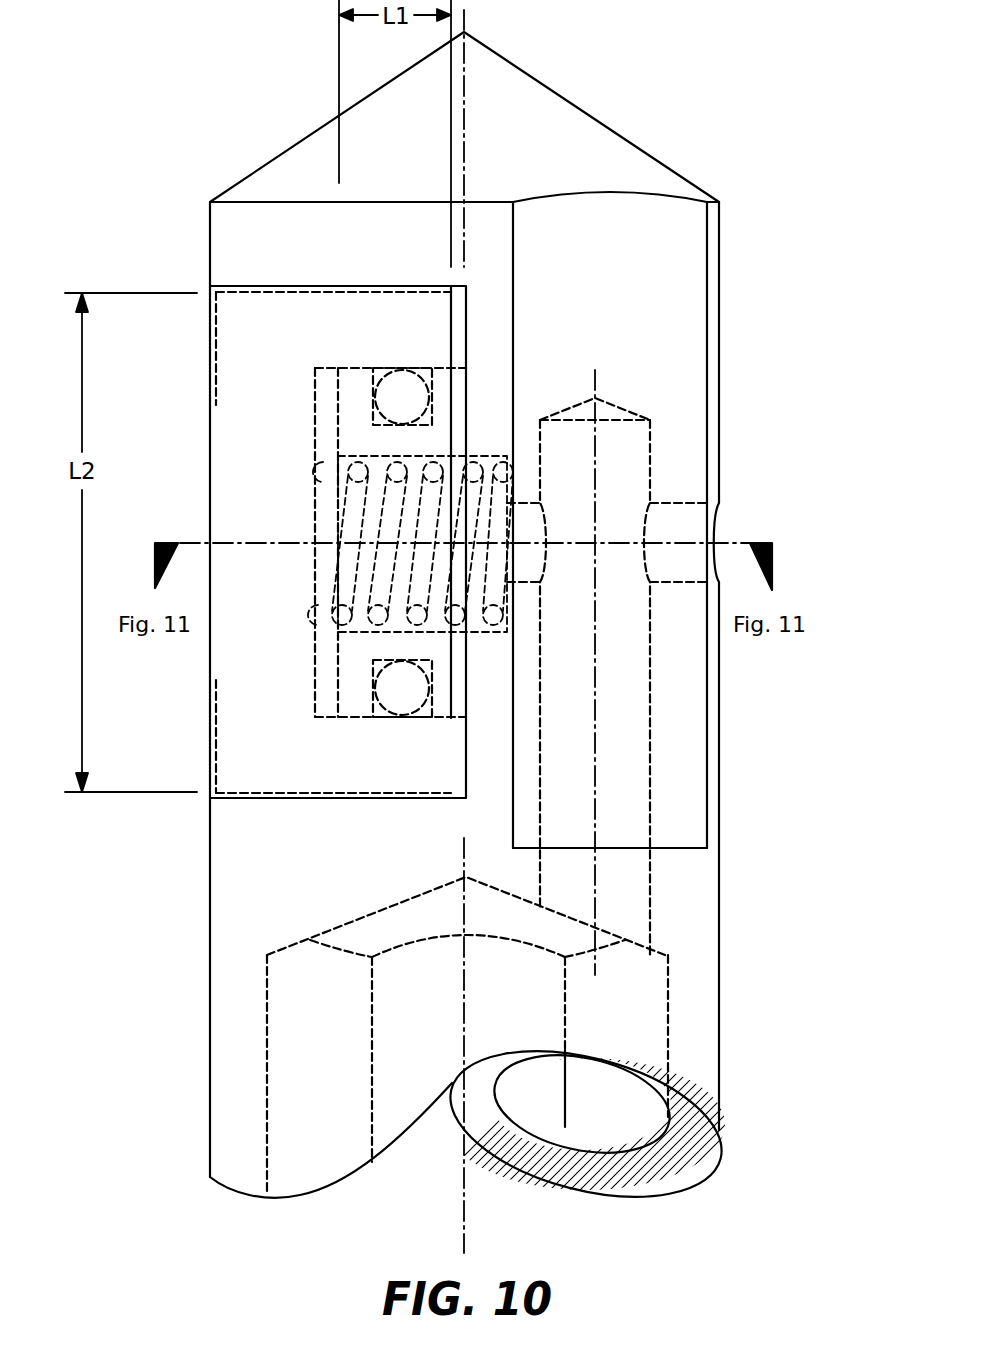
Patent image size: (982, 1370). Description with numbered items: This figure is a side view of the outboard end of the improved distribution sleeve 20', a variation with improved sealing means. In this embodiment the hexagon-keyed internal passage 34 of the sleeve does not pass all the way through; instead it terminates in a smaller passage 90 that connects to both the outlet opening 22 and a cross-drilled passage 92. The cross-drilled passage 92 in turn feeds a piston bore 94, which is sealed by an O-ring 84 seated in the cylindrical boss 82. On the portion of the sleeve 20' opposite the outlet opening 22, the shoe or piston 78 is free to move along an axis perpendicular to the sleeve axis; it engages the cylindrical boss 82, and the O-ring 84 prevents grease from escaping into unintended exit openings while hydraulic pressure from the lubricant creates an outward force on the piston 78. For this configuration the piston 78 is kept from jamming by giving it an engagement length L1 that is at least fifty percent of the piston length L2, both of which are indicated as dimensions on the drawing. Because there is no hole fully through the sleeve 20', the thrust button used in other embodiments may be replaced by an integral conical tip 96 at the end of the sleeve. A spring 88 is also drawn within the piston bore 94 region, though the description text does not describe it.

The distribution sleeve 20' is at (523, 700).
The outlet opening 22 is at (718, 518).
The hexagon-keyed internal passage 34 is at (668, 1030).
The shoe or piston 78 is at (210, 433).
The cylindrical boss 82 is at (362, 366).
The O-ring 84 is at (385, 720).
The spring 88 is at (355, 511).
The smaller passage 90 is at (651, 735).
The cross-drilled passage 92 is at (547, 525).
The piston bore 94 is at (327, 661).
The integral conical tip 96 is at (633, 143).